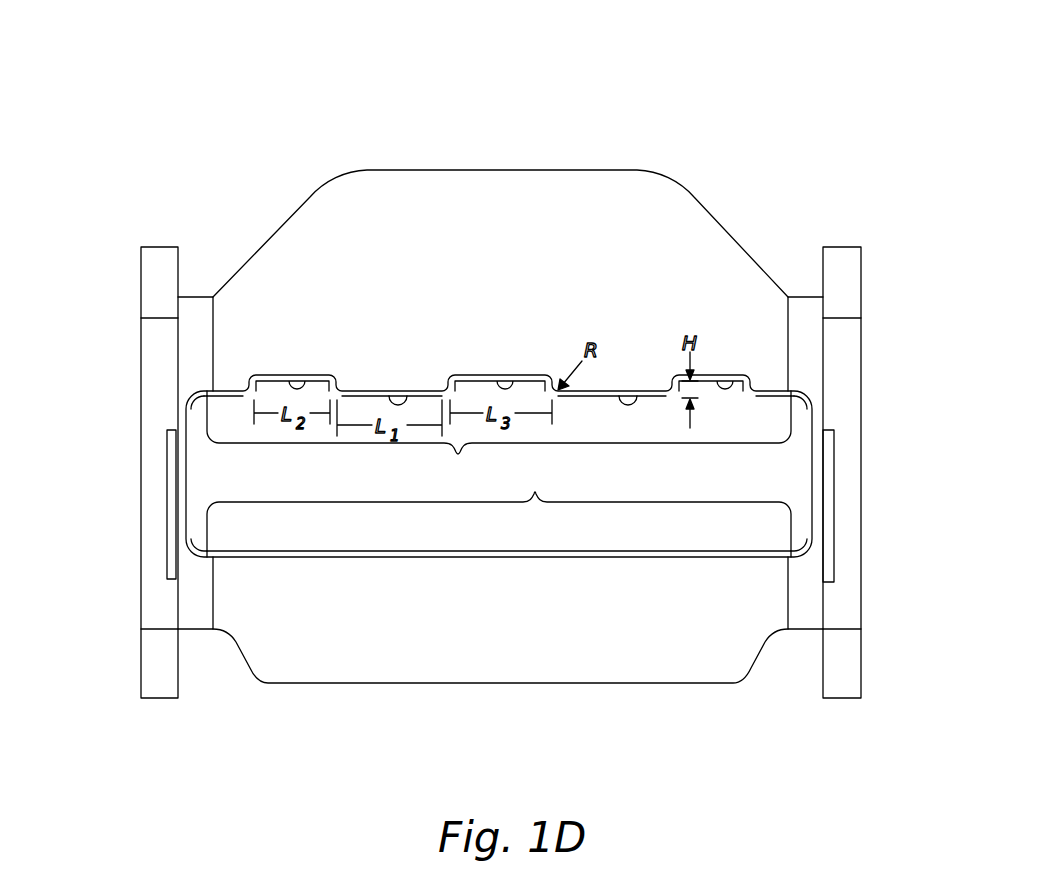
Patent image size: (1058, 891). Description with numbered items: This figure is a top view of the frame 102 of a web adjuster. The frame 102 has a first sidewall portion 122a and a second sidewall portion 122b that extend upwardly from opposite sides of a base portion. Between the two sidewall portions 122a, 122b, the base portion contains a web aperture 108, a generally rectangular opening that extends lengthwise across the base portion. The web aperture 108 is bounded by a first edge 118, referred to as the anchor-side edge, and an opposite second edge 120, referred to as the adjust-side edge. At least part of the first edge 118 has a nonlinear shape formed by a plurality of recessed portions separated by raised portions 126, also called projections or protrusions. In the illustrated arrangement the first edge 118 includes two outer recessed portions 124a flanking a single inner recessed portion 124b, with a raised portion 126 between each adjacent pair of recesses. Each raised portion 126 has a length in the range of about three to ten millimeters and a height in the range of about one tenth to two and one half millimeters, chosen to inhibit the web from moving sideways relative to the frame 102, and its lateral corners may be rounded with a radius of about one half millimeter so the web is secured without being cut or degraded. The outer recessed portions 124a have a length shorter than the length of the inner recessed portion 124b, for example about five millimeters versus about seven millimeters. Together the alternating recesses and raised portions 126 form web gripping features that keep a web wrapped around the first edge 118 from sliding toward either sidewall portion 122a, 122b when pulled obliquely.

The frame 102 is at (279, 127).
The web aperture 108 is at (428, 520).
The first edge 118 is at (499, 440).
The second edge 120 is at (499, 511).
The first sidewall portion 122a is at (155, 360).
The second sidewall portion 122b is at (848, 360).
The outer recessed portions 124a is at (303, 376).
The inner recessed portion 124b is at (510, 375).
The raised portions 126 is at (401, 396).